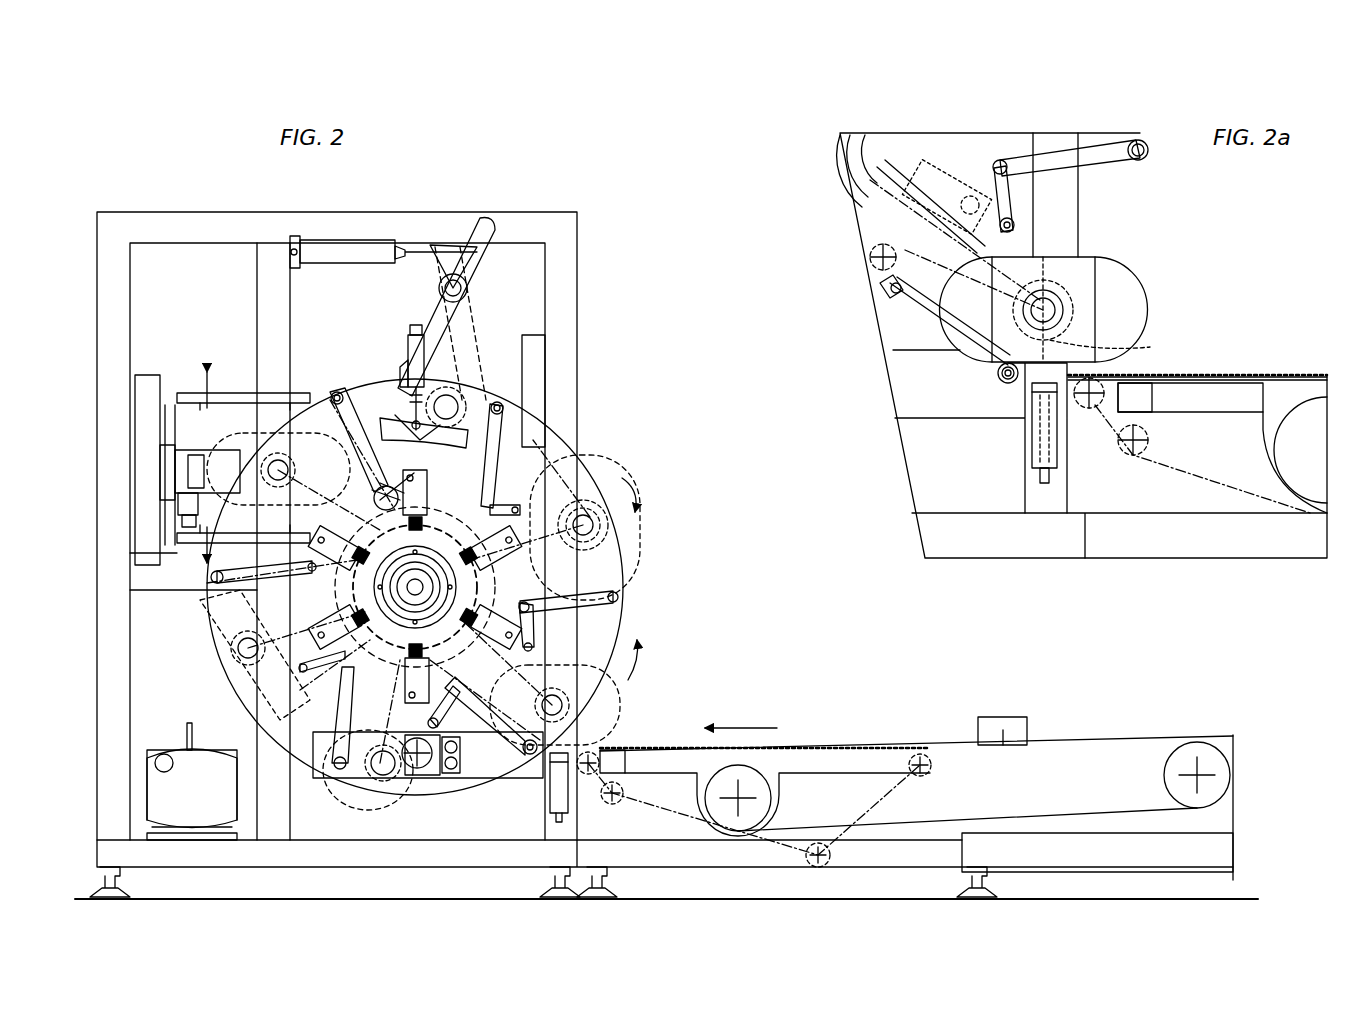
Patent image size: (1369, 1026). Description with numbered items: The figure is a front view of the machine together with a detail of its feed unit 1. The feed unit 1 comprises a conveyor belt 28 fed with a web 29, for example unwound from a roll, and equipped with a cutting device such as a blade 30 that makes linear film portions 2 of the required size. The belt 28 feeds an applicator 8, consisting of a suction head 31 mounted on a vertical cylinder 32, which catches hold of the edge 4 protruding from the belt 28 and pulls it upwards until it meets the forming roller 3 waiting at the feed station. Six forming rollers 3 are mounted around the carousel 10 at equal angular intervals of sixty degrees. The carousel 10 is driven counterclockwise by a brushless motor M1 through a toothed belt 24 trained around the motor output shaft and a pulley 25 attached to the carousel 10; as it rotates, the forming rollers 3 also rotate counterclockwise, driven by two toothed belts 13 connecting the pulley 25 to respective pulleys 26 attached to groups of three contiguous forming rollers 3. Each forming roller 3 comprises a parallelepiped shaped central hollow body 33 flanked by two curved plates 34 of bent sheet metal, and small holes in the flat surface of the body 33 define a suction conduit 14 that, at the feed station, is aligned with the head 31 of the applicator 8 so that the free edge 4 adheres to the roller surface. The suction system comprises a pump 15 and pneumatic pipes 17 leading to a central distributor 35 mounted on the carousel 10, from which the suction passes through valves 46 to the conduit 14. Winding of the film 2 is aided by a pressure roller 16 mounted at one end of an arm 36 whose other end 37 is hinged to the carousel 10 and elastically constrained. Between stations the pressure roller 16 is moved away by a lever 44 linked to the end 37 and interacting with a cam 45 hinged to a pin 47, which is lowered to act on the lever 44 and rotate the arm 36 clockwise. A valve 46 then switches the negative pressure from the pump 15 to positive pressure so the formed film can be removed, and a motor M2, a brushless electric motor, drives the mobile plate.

In FIG. 2, the feed unit 1 is at (805, 712).
In FIG. 2A, the feed unit 1 is at (1283, 345).
In FIG. 2, the film portion 2 is at (920, 755).
In FIG. 2A, the film portion 2 is at (1210, 377).
In FIG. 2A, the forming roller 3 is at (1123, 277).
In FIG. 2A, the edge 4 is at (1040, 387).
In FIG. 2A, the applicator 8 is at (1073, 445).
In FIG. 2, the carousel 10 is at (268, 760).
In FIG. 2, the toothed belt 13 is at (560, 580).
In FIG. 2A, the suction conduit 14 is at (1150, 347).
In FIG. 2, the pump 15 is at (204, 808).
In FIG. 2, the pressure roller 16 is at (545, 760).
In FIG. 2A, the pressure roller 16 is at (1003, 383).
In FIG. 2A, the pneumatic pipes 17 is at (880, 193).
In FIG. 2, the toothed belt 24 is at (305, 670).
In FIG. 2, the pulley 25 is at (262, 578).
In FIG. 2, the pulley 26 is at (383, 780).
In FIG. 2, the conveyor belt 28 is at (975, 748).
In FIG. 2, the web 29 is at (1078, 740).
In FIG. 2, the blade 30 is at (1000, 717).
In FIG. 2A, the suction head 31 is at (1037, 393).
In FIG. 2, the vertical cylinder 32 is at (558, 798).
In FIG. 2A, the vertical cylinder 32 is at (1043, 475).
In FIG. 2A, the central hollow body 33 is at (1077, 273).
In FIG. 2A, the curved plate 34 is at (880, 323).
In FIG. 2A, the distributor 35 is at (1053, 273).
In FIG. 2, the arm 36 is at (470, 775).
In FIG. 2A, the arm 36 is at (977, 343).
In FIG. 2A, the end 37 is at (870, 274).
In FIG. 2, the lever 44 is at (390, 430).
In FIG. 2, the cam 45 is at (390, 423).
In FIG. 2, the valve 46 is at (280, 590).
In FIG. 2, the pin 47 is at (465, 437).
In FIG. 2, the brushless motor M1 is at (428, 775).
In FIG. 2, the motor M2 is at (190, 460).